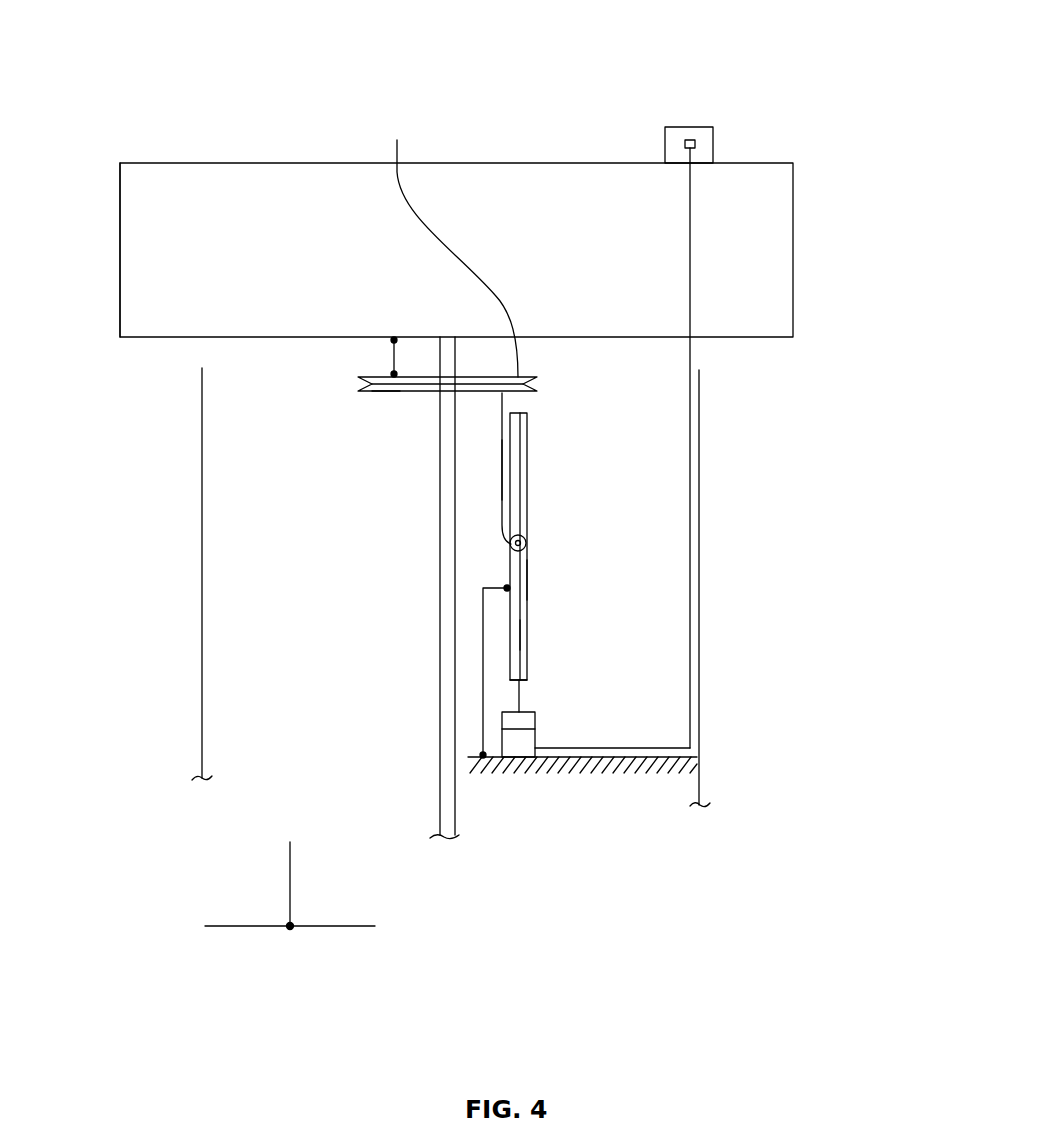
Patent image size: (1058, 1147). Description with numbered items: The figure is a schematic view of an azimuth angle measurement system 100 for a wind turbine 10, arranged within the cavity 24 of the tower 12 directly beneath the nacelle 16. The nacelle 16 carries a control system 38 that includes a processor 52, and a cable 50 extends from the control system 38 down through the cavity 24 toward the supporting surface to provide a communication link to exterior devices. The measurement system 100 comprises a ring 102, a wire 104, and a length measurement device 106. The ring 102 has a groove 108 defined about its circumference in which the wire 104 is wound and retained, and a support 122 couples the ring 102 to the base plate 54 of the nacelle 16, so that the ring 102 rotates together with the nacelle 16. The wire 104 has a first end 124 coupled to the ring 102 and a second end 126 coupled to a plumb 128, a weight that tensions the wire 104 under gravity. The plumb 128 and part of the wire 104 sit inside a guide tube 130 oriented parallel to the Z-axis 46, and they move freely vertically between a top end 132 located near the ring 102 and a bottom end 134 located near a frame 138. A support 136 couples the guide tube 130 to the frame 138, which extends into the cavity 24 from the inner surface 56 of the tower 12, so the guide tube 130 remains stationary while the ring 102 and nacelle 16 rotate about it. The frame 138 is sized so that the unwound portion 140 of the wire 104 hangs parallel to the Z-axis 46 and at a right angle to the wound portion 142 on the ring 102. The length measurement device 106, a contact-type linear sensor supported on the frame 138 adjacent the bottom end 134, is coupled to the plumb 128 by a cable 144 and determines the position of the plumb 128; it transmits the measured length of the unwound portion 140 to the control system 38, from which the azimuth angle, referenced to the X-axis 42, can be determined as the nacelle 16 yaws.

The wind turbine 10 is at (106, 34).
The nacelle 16 is at (146, 130).
The base plate 54 is at (120, 250).
The control system 38 is at (713, 145).
The processor 52 is at (690, 140).
The azimuth angle measurement system 100 is at (835, 370).
The tower 12 is at (202, 400).
The ring 102 is at (447, 328).
The support 122 is at (394, 355).
The groove 108 is at (355, 384).
The wire 104 is at (520, 402).
The wound portion of wire 142 is at (378, 393).
The first end of wire 124 is at (412, 452).
The unwound portion of wire 140 is at (497, 460).
The top end of guide tube 132 is at (527, 413).
The guide tube 130 is at (527, 573).
The second end of wire 126 is at (522, 536).
The plumb 128 is at (524, 542).
The length measurement device 106 is at (521, 637).
The bottom end of guide tube 134 is at (529, 680).
The cable 144 is at (521, 705).
The support 136 is at (483, 680).
The cable 50 is at (440, 725).
The frame 138 is at (594, 758).
The inner surface 56 is at (699, 568).
The cavity 24 is at (331, 589).
The Z-axis 46 is at (290, 874).
The X-axis 42 is at (340, 928).